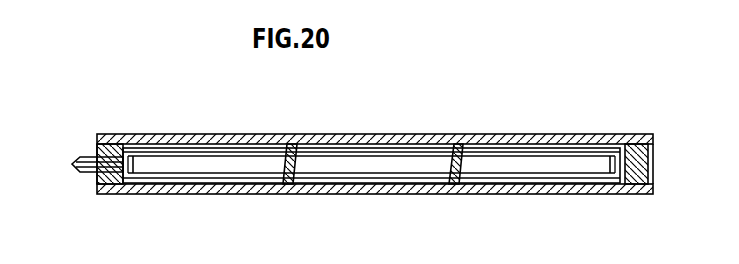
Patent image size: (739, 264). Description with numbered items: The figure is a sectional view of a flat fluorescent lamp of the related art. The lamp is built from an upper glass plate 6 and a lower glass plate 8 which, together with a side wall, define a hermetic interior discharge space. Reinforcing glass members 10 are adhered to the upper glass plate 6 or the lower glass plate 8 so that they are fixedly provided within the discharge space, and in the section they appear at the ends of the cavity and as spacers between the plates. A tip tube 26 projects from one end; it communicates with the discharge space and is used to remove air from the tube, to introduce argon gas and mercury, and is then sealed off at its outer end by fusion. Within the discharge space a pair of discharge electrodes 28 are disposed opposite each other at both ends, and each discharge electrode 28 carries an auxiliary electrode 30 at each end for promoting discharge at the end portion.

The upper glass plate 6 is at (560, 141).
The lower glass plate 8 is at (567, 190).
The reinforcing glass member 10 is at (653, 157).
The tip tube 26 is at (82, 157).
The discharge electrode 28 is at (366, 165).
The auxiliary electrode 30 is at (135, 165).